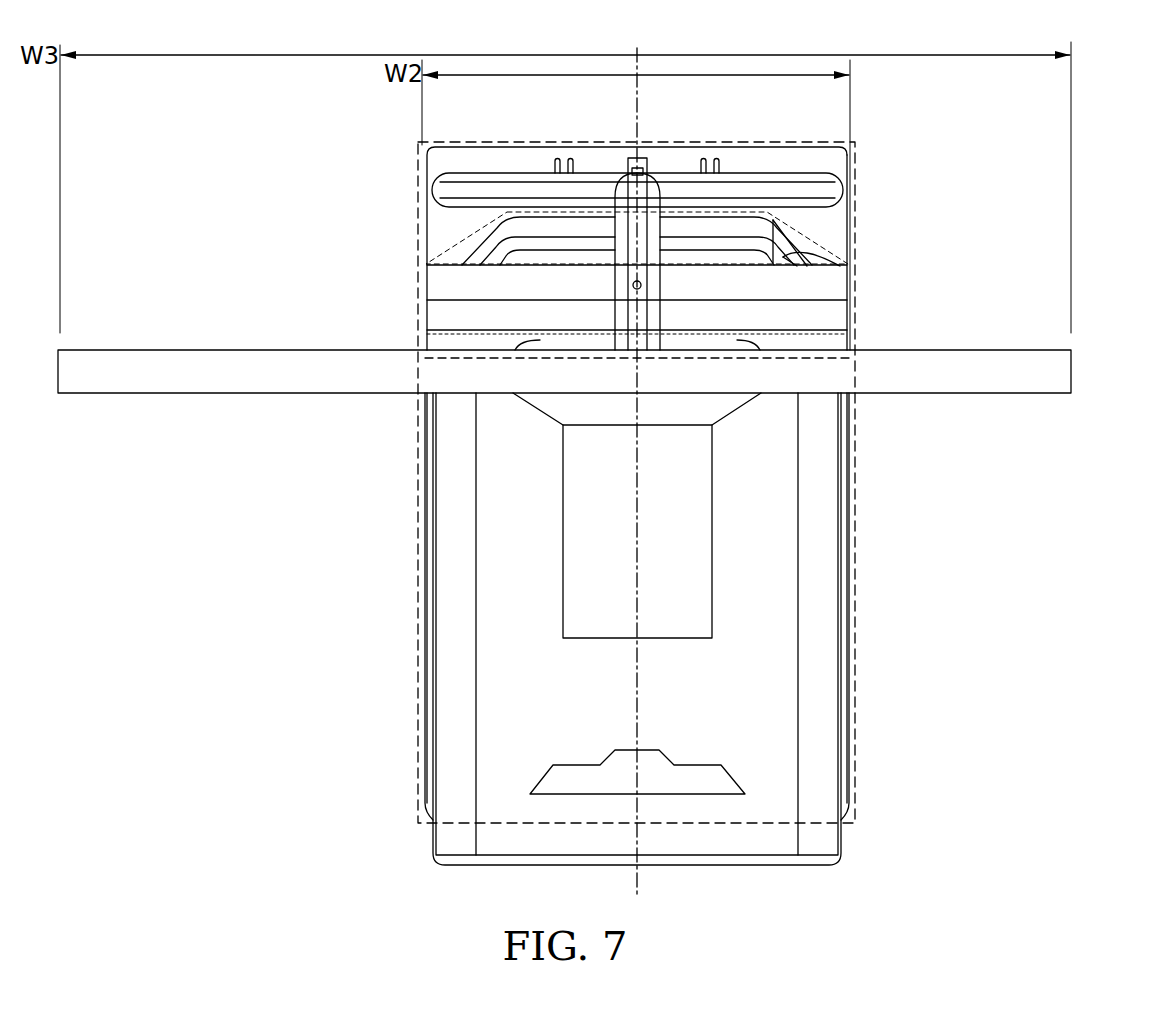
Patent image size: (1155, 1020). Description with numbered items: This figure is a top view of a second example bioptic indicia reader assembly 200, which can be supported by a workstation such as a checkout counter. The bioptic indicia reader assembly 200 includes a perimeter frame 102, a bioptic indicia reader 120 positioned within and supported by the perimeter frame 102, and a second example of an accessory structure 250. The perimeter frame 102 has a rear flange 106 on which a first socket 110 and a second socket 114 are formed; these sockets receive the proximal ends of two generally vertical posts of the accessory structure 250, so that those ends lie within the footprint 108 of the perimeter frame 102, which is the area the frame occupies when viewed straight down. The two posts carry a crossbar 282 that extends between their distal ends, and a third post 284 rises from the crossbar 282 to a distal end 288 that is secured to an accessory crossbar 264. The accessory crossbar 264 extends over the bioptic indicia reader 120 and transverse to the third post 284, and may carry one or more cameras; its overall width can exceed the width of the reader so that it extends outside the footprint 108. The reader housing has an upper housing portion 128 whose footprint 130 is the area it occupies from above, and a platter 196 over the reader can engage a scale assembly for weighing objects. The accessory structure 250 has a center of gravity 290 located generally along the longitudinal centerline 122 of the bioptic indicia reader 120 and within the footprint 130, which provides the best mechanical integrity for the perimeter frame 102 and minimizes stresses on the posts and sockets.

The perimeter frame 102 is at (636, 454).
The rear flange 106 is at (770, 160).
The footprint 108 is at (856, 530).
The first socket 110 is at (448, 173).
The second socket 114 is at (848, 173).
The bioptic indicia reader 120 is at (444, 248).
The longitudinal centerline 122 is at (640, 884).
The upper housing portion 128 is at (850, 268).
The footprint 130 is at (468, 243).
The platter 196 is at (775, 635).
The bioptic indicia reader assembly 200 is at (258, 497).
The accessory structure 250 is at (394, 336).
The accessory crossbar 264 is at (1055, 368).
The crossbar 282 is at (515, 192).
The third post 284 is at (640, 247).
The distal end 288 is at (677, 346).
The center of gravity 290 is at (641, 285).